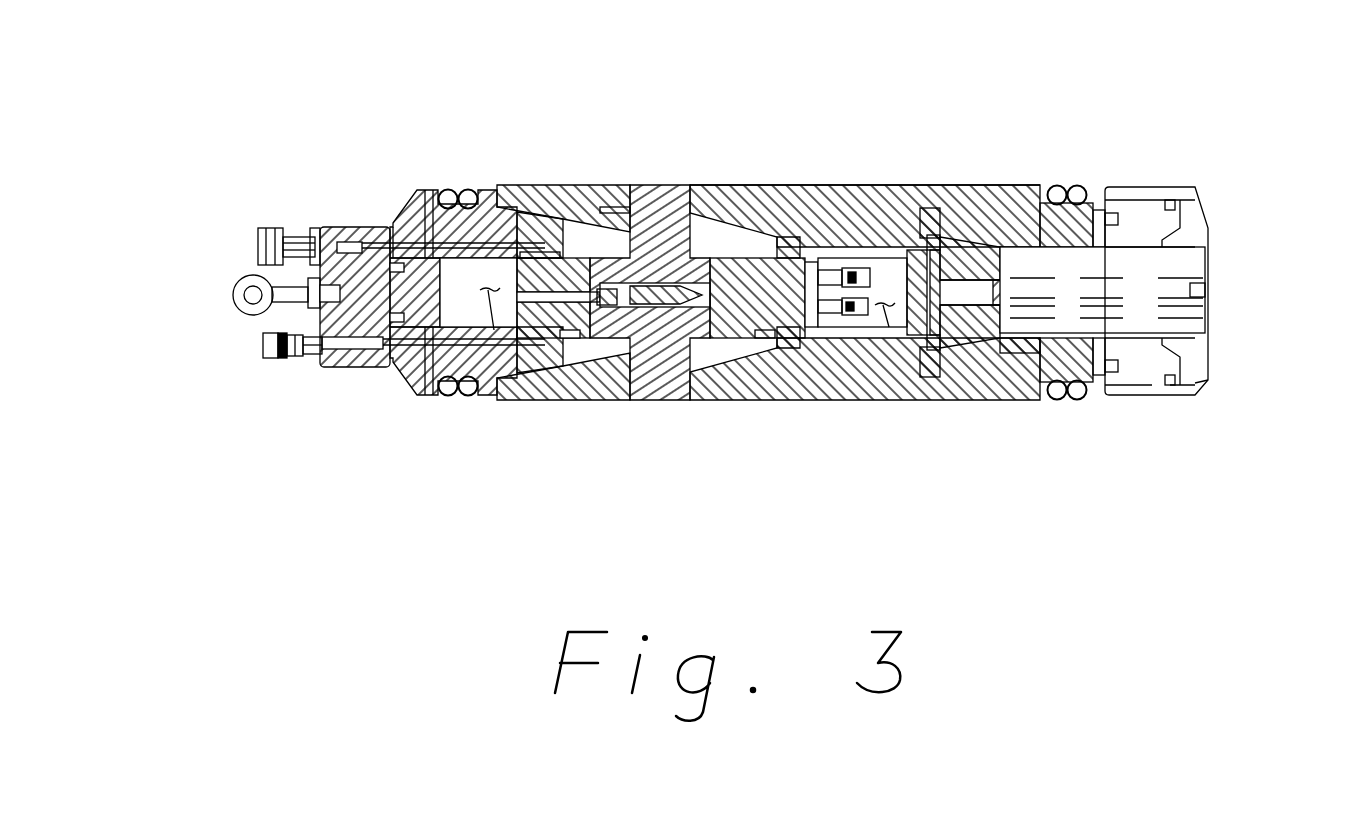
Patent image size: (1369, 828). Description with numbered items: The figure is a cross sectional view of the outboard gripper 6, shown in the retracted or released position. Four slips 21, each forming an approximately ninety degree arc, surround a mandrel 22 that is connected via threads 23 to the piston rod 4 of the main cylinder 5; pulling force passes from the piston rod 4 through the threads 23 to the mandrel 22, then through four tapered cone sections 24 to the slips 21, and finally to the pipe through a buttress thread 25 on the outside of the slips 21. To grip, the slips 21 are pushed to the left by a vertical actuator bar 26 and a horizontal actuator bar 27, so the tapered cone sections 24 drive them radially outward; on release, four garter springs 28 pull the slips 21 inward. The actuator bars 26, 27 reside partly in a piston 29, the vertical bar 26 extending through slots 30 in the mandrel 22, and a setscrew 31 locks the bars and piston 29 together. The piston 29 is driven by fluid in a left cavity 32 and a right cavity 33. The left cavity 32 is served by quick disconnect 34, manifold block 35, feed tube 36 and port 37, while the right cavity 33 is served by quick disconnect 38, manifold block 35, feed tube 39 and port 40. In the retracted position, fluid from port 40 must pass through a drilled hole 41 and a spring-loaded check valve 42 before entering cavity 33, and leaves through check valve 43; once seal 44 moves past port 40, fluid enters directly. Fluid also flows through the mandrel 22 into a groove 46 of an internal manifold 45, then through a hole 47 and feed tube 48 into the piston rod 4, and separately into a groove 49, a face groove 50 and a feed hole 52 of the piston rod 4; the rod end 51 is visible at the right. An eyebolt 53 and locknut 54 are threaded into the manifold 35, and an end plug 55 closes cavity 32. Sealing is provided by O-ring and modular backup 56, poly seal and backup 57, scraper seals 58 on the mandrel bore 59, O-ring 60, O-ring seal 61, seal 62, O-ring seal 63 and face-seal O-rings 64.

The piston rod 4 is at (1204, 295).
The main cylinder 5 is at (1202, 291).
The outboard gripper 6 is at (706, 238).
The slips 21 is at (768, 245).
The mandrel 22 is at (477, 168).
The threads 23 is at (1150, 249).
The tapered cone sections 24 is at (655, 171).
The buttress thread 25 is at (536, 352).
The vertical actuator bar 26 is at (865, 120).
The horizontal actuator bar 27 is at (774, 383).
The garter springs 28 is at (810, 412).
The piston 29 is at (633, 400).
The slots 30 is at (572, 194).
The setscrew 31 is at (674, 315).
The left cavity 32 is at (453, 383).
The right cavity 33 is at (964, 370).
The quick disconnect 34 is at (237, 357).
The manifold block 35 is at (239, 400).
The feed tube 36 is at (336, 346).
The port 37 is at (356, 383).
The quick disconnect 38 is at (235, 209).
The feed tube 39 is at (333, 181).
The port 40 is at (832, 205).
The drilled hole 41 is at (868, 383).
The spring-loaded check valve 42 is at (891, 209).
The check valve 43 is at (883, 348).
The seal 44 is at (891, 163).
The internal manifold 45 is at (1052, 188).
The groove 46 is at (997, 218).
The hole 47 is at (974, 345).
The feed tube 48 is at (1057, 393).
The groove 49 is at (1063, 403).
The face groove 50 is at (1157, 444).
The clamping rod 51 is at (1162, 304).
The feed hole 52 is at (1260, 424).
The eyebolt 53 is at (210, 277).
The locknut 54 is at (231, 254).
The end plug 55 is at (438, 250).
The O-ring seal and modular backup 56 is at (462, 250).
The poly seal and backup 57 is at (680, 231).
The seal 58 is at (697, 367).
The mandrel bore 59 is at (624, 395).
The O-ring 60 is at (986, 208).
The O-ring seal 61 is at (1063, 172).
The O-ring seal and two modular back-ups 62 is at (1159, 137).
The O-ring seal 63 is at (1205, 259).
The O-ring seals 64 is at (408, 285).